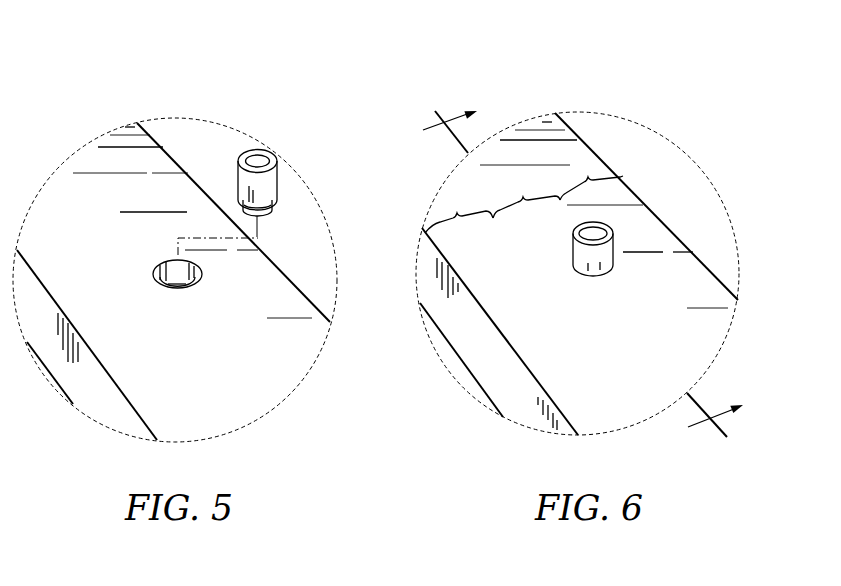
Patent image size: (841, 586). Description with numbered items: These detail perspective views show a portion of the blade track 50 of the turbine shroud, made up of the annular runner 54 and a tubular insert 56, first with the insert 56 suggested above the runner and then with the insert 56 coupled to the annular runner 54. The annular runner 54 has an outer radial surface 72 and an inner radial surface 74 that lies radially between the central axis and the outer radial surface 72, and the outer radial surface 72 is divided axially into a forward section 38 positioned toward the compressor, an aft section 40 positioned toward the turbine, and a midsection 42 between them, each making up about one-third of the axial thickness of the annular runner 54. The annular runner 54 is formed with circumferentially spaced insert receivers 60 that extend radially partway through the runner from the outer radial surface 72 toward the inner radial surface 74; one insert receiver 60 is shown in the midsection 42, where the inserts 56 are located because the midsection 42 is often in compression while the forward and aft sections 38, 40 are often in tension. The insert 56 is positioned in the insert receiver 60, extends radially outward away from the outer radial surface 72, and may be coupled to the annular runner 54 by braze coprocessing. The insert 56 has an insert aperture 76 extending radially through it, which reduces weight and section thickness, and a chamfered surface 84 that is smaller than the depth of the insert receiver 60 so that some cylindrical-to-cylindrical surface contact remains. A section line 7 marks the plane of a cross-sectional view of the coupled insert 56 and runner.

In FIG. 6, the section line 7- 7 is at (589, 267).
In FIG. 6, the forward section 38 is at (459, 212).
In FIG. 6, the aft section 40 is at (591, 176).
In FIG. 6, the midsection 42 is at (526, 195).
In FIG. 5, the blade track 50 is at (208, 62).
In FIG. 6, the blade track 50 is at (622, 113).
In FIG. 5, the annular runner 54 is at (138, 397).
In FIG. 6, the annular runner 54 is at (517, 332).
In FIG. 5, the insert 56 is at (277, 180).
In FIG. 6, the insert 56 is at (600, 274).
In FIG. 5, the insert receiver 60 is at (168, 272).
In FIG. 5, the outer radial surface 72 is at (282, 300).
In FIG. 6, the outer radial surface 72 is at (705, 290).
In FIG. 5, the inner radial surface 74 is at (53, 384).
In FIG. 6, the inner radial surface 74 is at (480, 384).
In FIG. 5, the insert aperture 76 is at (262, 153).
In FIG. 6, the insert aperture 76 is at (595, 235).
In FIG. 5, the chamfered surface 84 is at (273, 205).